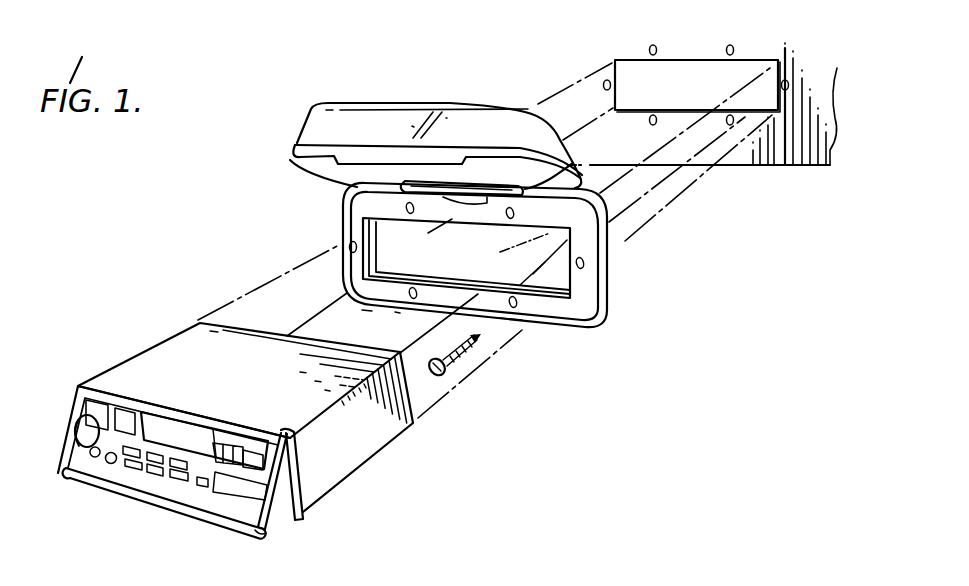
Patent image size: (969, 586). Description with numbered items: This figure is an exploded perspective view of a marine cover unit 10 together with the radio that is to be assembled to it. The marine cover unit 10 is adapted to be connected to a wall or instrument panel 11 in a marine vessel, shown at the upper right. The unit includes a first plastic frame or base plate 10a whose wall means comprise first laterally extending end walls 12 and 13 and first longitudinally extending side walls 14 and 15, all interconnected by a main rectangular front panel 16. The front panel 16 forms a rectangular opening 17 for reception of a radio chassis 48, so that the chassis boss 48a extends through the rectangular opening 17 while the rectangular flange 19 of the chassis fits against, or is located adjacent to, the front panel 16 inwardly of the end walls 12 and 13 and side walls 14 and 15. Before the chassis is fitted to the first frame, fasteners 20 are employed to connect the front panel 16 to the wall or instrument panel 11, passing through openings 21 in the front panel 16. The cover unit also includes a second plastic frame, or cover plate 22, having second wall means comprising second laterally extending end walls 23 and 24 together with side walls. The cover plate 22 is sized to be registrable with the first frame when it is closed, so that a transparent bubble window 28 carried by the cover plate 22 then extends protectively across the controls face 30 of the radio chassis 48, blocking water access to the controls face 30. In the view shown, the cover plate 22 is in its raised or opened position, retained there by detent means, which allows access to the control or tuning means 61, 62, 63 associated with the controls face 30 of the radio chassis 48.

The marine cover unit 10 is at (636, 320).
The first plastic frame or base plate 10a is at (561, 340).
The wall or instrument panel 11 is at (800, 143).
The first laterally extending end wall 12 is at (340, 221).
The first laterally extending end wall 13 is at (610, 267).
The first longitudinally extending side wall 14 is at (605, 175).
The first longitudinally extending side wall 15 is at (535, 325).
The main rectangular front panel 16 is at (483, 213).
The rectangular opening 17 is at (423, 257).
The rectangular flange 19 is at (292, 451).
The fasteners 20 is at (460, 366).
The openings 21 is at (348, 247).
The second plastic frame or cover plate 22 is at (280, 143).
The second laterally extending end wall 23 is at (305, 163).
The second laterally extending end wall 24 is at (565, 183).
The transparent bubble window 28 is at (403, 103).
The controls face 30 is at (157, 428).
The radio chassis 48 is at (155, 330).
The chassis boss 48a is at (310, 497).
The control or tuning means 61 is at (75, 421).
The control or tuning means 62 is at (240, 446).
The control or tuning means 63 is at (262, 453).